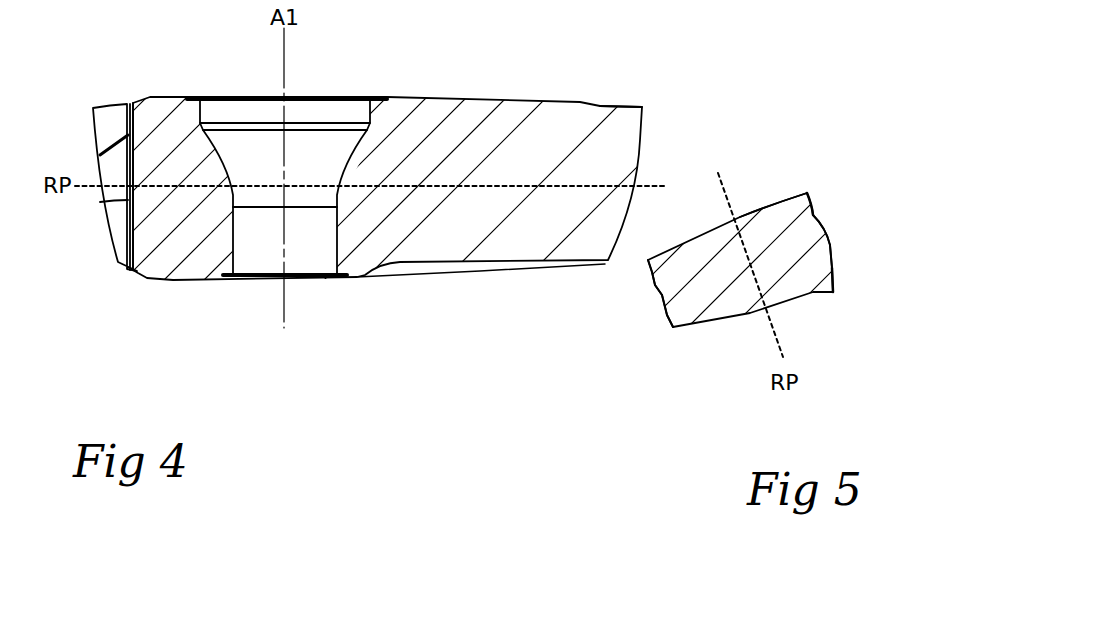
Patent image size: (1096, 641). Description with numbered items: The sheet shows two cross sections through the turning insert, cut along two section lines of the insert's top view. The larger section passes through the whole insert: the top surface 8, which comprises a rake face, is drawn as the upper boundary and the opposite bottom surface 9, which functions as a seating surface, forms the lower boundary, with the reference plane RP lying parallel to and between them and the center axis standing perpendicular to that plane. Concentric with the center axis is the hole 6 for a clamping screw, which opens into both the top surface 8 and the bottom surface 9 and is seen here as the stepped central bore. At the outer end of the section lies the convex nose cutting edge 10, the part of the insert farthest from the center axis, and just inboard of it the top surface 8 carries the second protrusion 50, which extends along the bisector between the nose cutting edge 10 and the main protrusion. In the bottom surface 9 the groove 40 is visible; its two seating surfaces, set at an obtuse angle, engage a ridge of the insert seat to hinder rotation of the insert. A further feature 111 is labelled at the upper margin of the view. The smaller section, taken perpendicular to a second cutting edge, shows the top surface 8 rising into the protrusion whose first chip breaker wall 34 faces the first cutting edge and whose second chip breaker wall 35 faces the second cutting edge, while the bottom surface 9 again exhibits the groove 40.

In FIG. 4, the nose cutting edge 10 is at (180, 0).
In FIG. 4, the central through hole 6 is at (285, 186).
In FIG. 4, the top surface 8 is at (468, 97).
In FIG. 5, the top surface 8 is at (830, 237).
In FIG. 4, the bottom surface 9 is at (357, 277).
In FIG. 5, the bottom surface 9 is at (648, 263).
In FIG. 4, the groove 40 is at (432, 272).
In FIG. 5, the groove 40 is at (662, 297).
In FIG. 4, the second protrusion 50 is at (620, 107).
In FIG. 4, the cutting edge 111 is at (445, 4).
In FIG. 5, the second chip breaker wall 35 is at (817, 220).
In FIG. 5, the first chip breaker wall 34 is at (832, 265).